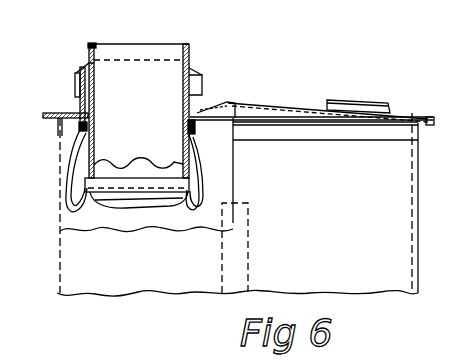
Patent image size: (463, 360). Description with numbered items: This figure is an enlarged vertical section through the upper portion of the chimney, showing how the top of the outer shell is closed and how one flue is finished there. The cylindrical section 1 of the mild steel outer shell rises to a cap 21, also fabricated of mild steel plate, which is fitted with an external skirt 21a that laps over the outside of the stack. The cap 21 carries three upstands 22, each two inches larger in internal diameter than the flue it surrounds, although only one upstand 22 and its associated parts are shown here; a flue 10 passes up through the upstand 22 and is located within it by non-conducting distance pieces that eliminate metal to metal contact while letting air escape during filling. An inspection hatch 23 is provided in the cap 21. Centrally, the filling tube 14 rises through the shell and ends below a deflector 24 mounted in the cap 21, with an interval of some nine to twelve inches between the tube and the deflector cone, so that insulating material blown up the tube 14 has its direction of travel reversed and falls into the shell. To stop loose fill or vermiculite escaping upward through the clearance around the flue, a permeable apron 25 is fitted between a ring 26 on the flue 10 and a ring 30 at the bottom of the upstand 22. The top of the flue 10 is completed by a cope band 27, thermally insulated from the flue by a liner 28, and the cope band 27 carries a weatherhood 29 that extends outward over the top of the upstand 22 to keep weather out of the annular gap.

The cylindrical section 1 is at (60, 208).
The flue 10 is at (200, 80).
The filling tube 14 is at (250, 240).
The cap 21 is at (313, 127).
The external skirt 21a is at (60, 127).
The upstand 22 is at (200, 108).
The inspection hatch 23 is at (347, 102).
The deflector 24 is at (245, 103).
The permeable apron 25 is at (72, 158).
The ring 26 is at (103, 193).
The cope band 27 is at (87, 63).
The liner 28 is at (90, 43).
The weatherhood 29 is at (75, 82).
The ring 30 is at (70, 112).